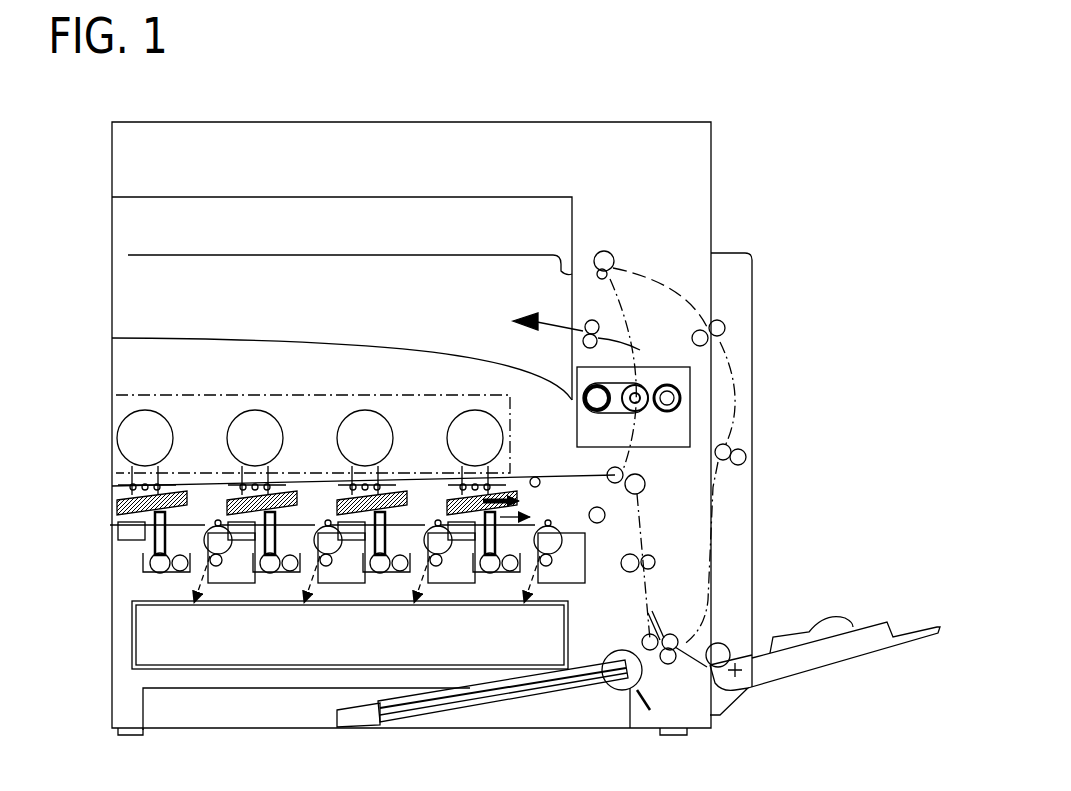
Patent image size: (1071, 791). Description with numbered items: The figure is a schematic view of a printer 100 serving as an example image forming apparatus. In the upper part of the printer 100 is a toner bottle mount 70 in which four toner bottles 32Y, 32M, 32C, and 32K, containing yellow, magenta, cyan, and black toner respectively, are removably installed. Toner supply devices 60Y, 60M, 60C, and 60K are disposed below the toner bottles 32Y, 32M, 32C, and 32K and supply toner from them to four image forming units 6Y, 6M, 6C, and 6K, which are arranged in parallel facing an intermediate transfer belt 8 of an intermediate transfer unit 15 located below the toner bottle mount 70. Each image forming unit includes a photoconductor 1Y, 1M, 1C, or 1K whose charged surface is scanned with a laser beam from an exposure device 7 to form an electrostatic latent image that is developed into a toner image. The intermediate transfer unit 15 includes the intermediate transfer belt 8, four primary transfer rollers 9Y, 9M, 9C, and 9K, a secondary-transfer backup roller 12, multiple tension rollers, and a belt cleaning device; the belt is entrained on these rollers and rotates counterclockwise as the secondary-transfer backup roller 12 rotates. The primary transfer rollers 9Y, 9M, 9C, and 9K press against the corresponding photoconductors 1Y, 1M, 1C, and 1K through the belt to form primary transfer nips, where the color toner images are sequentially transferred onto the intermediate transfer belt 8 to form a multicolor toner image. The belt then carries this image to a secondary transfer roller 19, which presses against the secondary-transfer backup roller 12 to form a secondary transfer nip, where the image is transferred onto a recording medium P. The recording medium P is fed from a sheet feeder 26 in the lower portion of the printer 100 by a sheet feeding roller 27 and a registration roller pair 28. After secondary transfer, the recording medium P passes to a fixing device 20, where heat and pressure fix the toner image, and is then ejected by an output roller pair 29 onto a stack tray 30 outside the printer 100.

The printer 100 is at (648, 104).
The stack tray 30 is at (370, 341).
The toner bottle mount 70 is at (222, 390).
The toner supply device 60Y is at (118, 498).
The toner supply device 60M is at (250, 477).
The toner supply device 60C is at (360, 477).
The toner supply device 60K is at (463, 470).
The toner bottle 32Y is at (143, 417).
The toner bottle 32M is at (255, 417).
The toner bottle 32C is at (362, 417).
The toner bottle 32K is at (467, 418).
The primary transfer roller 9Y is at (218, 520).
The primary transfer roller 9M is at (328, 520).
The primary transfer roller 9C is at (438, 520).
The primary transfer roller 9K is at (548, 520).
The photoconductor 1Y is at (220, 552).
The photoconductor 1M is at (325, 551).
The photoconductor 1C is at (433, 552).
The photoconductor 1K is at (546, 553).
The image forming unit 6Y is at (138, 565).
The image forming unit 6M is at (319, 585).
The image forming unit 6C is at (430, 585).
The image forming unit 6K is at (578, 589).
The output roller pair 29 is at (582, 338).
The fixing device 20 is at (657, 367).
The secondary-transfer backup roller 12 is at (610, 470).
The secondary transfer roller 19 is at (647, 478).
The intermediate transfer belt 8 is at (590, 502).
The intermediate transfer unit 15 is at (592, 537).
The registration roller pair 28 is at (650, 550).
The exposure device 7 is at (132, 643).
The sheet feeder 26 is at (142, 707).
The sheet feeding roller 27 is at (636, 672).
The recording medium P is at (362, 724).